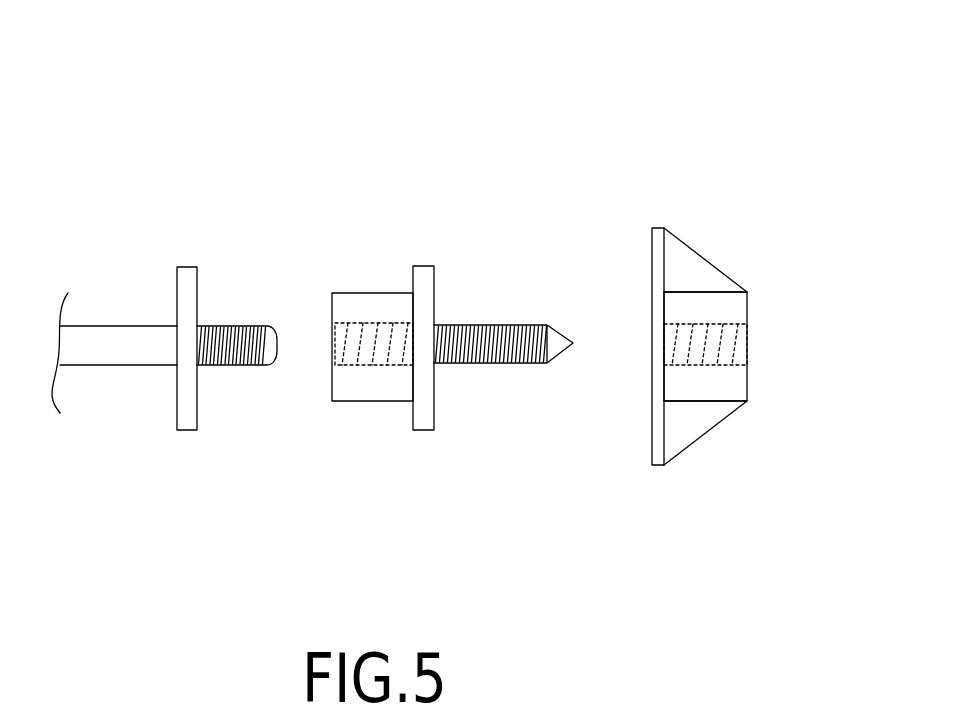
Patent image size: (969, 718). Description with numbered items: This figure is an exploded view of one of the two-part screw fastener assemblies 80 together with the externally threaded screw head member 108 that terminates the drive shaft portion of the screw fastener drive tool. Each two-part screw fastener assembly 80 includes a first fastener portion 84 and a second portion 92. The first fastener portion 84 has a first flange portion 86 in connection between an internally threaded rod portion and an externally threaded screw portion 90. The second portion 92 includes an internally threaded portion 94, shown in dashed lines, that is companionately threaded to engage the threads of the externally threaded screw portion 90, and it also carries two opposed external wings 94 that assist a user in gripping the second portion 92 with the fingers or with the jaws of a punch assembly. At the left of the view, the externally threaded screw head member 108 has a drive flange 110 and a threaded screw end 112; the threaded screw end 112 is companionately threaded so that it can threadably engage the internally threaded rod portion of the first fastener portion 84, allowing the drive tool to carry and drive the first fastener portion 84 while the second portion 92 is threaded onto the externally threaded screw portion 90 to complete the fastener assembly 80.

The two-part screw fastener assembly 80 is at (474, 310).
The first fastener portion 84 is at (358, 252).
The first flange portion 86 is at (427, 268).
The externally threaded screw portion 90 is at (563, 337).
The second portion 92 is at (757, 333).
The internally threaded portion and external wings 94 is at (688, 277).
The externally threaded screw head member 108 is at (217, 328).
The drive flange 110 is at (188, 422).
The threaded screw end 112 is at (237, 330).